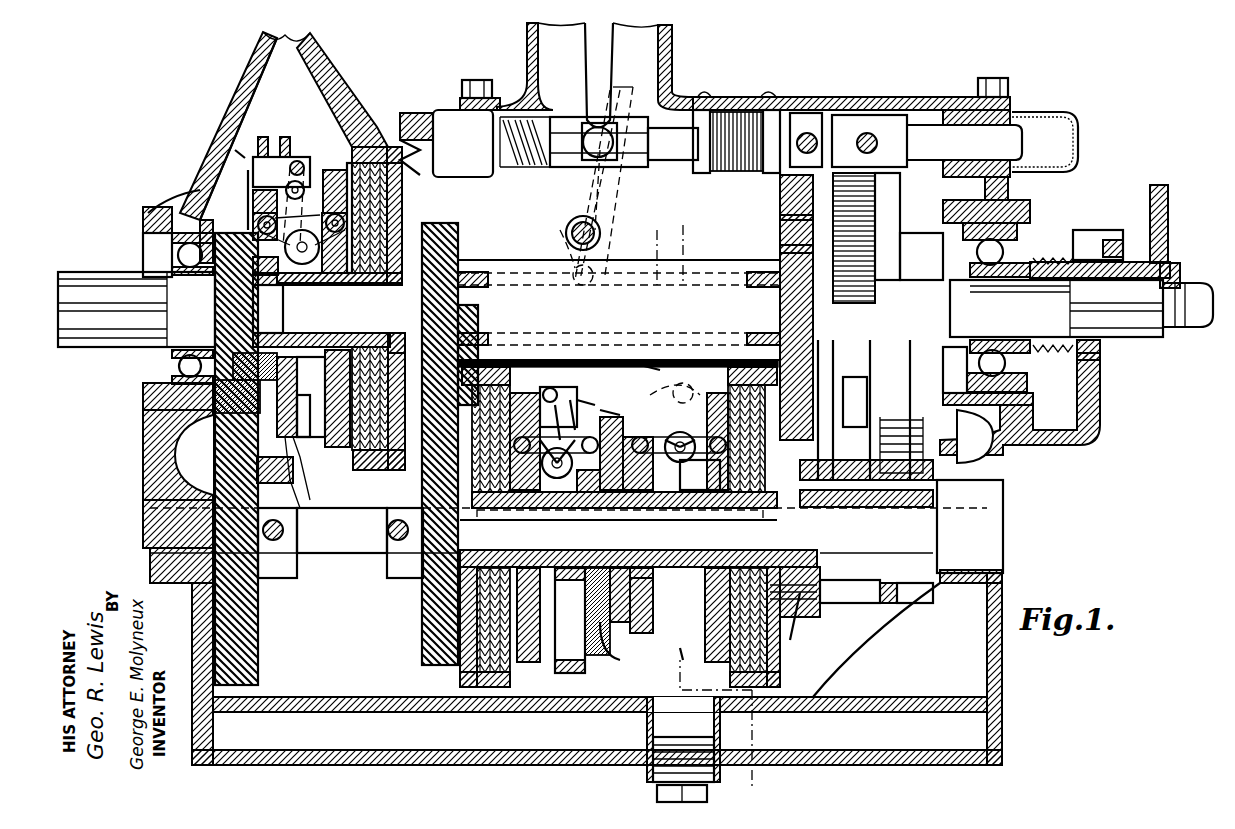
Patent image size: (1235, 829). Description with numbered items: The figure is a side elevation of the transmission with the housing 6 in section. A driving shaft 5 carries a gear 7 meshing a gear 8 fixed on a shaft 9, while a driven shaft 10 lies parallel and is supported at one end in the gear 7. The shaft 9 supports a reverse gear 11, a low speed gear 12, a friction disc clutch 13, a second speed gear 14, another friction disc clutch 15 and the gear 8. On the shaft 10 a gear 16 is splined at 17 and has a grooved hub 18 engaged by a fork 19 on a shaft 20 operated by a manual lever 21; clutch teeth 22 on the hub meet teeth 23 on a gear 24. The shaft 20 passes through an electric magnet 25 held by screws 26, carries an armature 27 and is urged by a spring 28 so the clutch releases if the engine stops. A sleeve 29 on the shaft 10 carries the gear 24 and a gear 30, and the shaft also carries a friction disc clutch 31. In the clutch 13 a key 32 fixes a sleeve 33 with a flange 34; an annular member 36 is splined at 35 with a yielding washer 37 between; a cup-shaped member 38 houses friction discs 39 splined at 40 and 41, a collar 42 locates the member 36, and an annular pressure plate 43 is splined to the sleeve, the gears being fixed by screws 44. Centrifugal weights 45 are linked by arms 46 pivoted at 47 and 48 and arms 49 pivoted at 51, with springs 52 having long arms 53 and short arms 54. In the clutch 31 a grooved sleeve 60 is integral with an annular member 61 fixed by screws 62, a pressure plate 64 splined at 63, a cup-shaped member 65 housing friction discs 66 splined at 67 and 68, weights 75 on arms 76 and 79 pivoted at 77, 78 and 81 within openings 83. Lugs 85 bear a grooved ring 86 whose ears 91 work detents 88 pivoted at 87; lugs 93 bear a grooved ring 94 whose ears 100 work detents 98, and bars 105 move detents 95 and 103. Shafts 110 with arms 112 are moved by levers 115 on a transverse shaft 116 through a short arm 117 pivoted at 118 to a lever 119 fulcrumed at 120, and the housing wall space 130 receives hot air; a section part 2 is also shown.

The transmission housing section 2 is at (718, 500).
The shaft 5 is at (75, 277).
The housing 6 is at (173, 430).
The gear 7 is at (213, 217).
The gear 8 is at (257, 627).
The shaft 9 is at (350, 553).
The shaft 10 is at (1075, 213).
The reverse gear 11 is at (897, 583).
The low speed gear 12 is at (800, 593).
The friction disc clutch 13 is at (678, 657).
The second speed gear 14 is at (422, 660).
The friction disc clutch 15 is at (553, 648).
The gear 16 is at (876, 205).
The spline 17 is at (925, 277).
The grooved hub 18 is at (887, 363).
The fork 19 is at (890, 243).
The shaft 20 is at (923, 133).
The manual lever 21 is at (610, 57).
The clutch teeth 22 is at (780, 217).
The clutch teeth 23 is at (813, 252).
The gear 24 is at (780, 193).
The electric magnet 25 is at (720, 173).
The screws 26 is at (710, 97).
The armature 27 is at (803, 115).
The spring 28 is at (520, 170).
The sleeve 29 is at (517, 262).
The gear 30 is at (452, 233).
The friction disc clutch 31 is at (246, 148).
The key 32 is at (763, 517).
The sleeve 33 is at (583, 560).
The flange 34 is at (607, 617).
The spline 35 is at (673, 550).
The annular member 36 is at (585, 623).
The washer 37 is at (600, 657).
The cup-shaped member 38 is at (465, 687).
The friction discs 39 is at (472, 650).
The spline 40 is at (497, 560).
The spline 41 is at (503, 390).
The collar 42 is at (660, 605).
The annular pressure plate 43 is at (523, 663).
The screws 44 is at (817, 460).
The centrifugal weights 45 is at (552, 490).
The arms 46 is at (607, 430).
The pivot 47 is at (603, 480).
The pivot 48 is at (590, 437).
The arms 49 is at (657, 430).
The pivot 51 is at (533, 407).
The springs 52 is at (227, 217).
The long arms 53 is at (640, 427).
The short arms 54 is at (543, 425).
The grooved sleeve 60 is at (263, 272).
The annular member 61 is at (207, 437).
The screws 62 is at (313, 403).
The spline 63 is at (332, 360).
The annular pressure plate 64 is at (317, 427).
The cup-shaped member 65 is at (367, 477).
The friction discs 66 is at (350, 440).
The spline 67 is at (365, 350).
The spline 68 is at (378, 167).
The centrifugal weights 75 is at (347, 283).
The arms 76 is at (372, 283).
The pivot 77 is at (312, 283).
The pivot 78 is at (337, 167).
The arms 79 is at (285, 312).
The pivot 81 is at (258, 222).
The openings 83 is at (257, 197).
The lugs 85 is at (238, 149).
The grooved ring 86 is at (277, 135).
The pivot 87 is at (300, 168).
The detents 88 is at (310, 200).
The ears 91 is at (250, 170).
The lugs 93 is at (613, 410).
The grooved ring 94 is at (570, 397).
The detents 95 is at (305, 470).
The detents 98 is at (557, 397).
The ears 100 is at (587, 403).
The detents 103 is at (692, 383).
The bars 105 is at (647, 370).
The shafts 110 is at (280, 366).
The arms 112 is at (305, 553).
The levers 115 is at (600, 248).
The transverse shaft 116 is at (605, 173).
The short arm 117 is at (573, 267).
The pivot 118 is at (573, 290).
The lever 119 is at (613, 190).
The fulcrum 120 is at (600, 177).
The space 130 is at (817, 737).